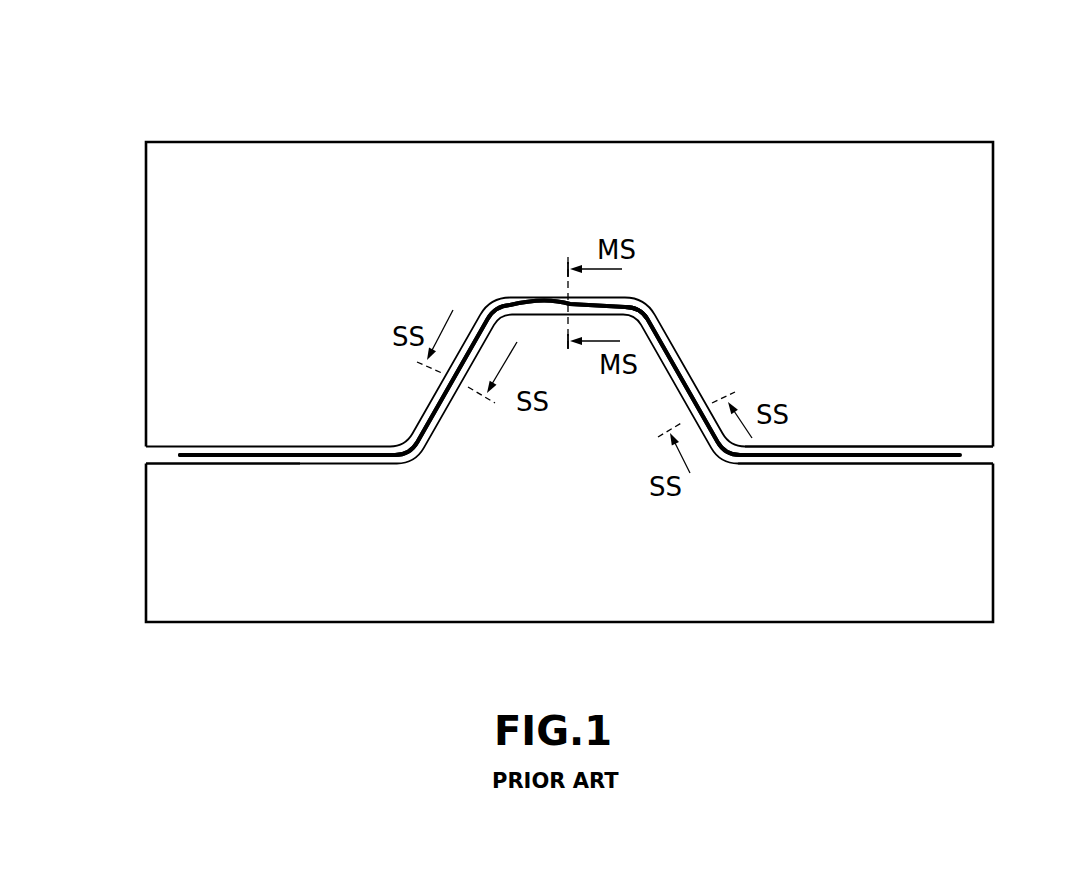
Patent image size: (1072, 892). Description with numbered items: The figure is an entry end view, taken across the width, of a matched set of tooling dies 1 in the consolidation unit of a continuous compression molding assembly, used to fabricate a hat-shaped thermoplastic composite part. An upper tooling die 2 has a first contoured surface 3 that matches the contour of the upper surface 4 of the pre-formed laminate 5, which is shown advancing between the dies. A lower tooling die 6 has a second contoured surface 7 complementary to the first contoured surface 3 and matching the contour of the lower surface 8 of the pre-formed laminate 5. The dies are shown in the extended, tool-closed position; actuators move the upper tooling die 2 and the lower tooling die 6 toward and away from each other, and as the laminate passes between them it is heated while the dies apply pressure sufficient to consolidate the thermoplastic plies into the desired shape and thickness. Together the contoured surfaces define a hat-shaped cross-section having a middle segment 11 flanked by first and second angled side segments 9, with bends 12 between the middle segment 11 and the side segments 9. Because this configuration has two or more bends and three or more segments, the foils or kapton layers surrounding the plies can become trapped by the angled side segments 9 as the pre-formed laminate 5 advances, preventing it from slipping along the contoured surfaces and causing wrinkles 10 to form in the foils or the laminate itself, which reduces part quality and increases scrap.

The tooling dies 1 is at (95, 286).
The upper tooling die 2 is at (980, 183).
The first contoured surface 3 is at (985, 450).
The upper surface 4 is at (212, 452).
The pre-formed laminate 5 is at (180, 453).
The lower tooling die 6 is at (980, 613).
The second contoured surface 7 is at (982, 458).
The lower surface 8 is at (240, 455).
The angled side segments 9 is at (458, 355).
The wrinkles 10 is at (520, 307).
The middle segment 11 is at (620, 296).
The bends 12 is at (494, 310).